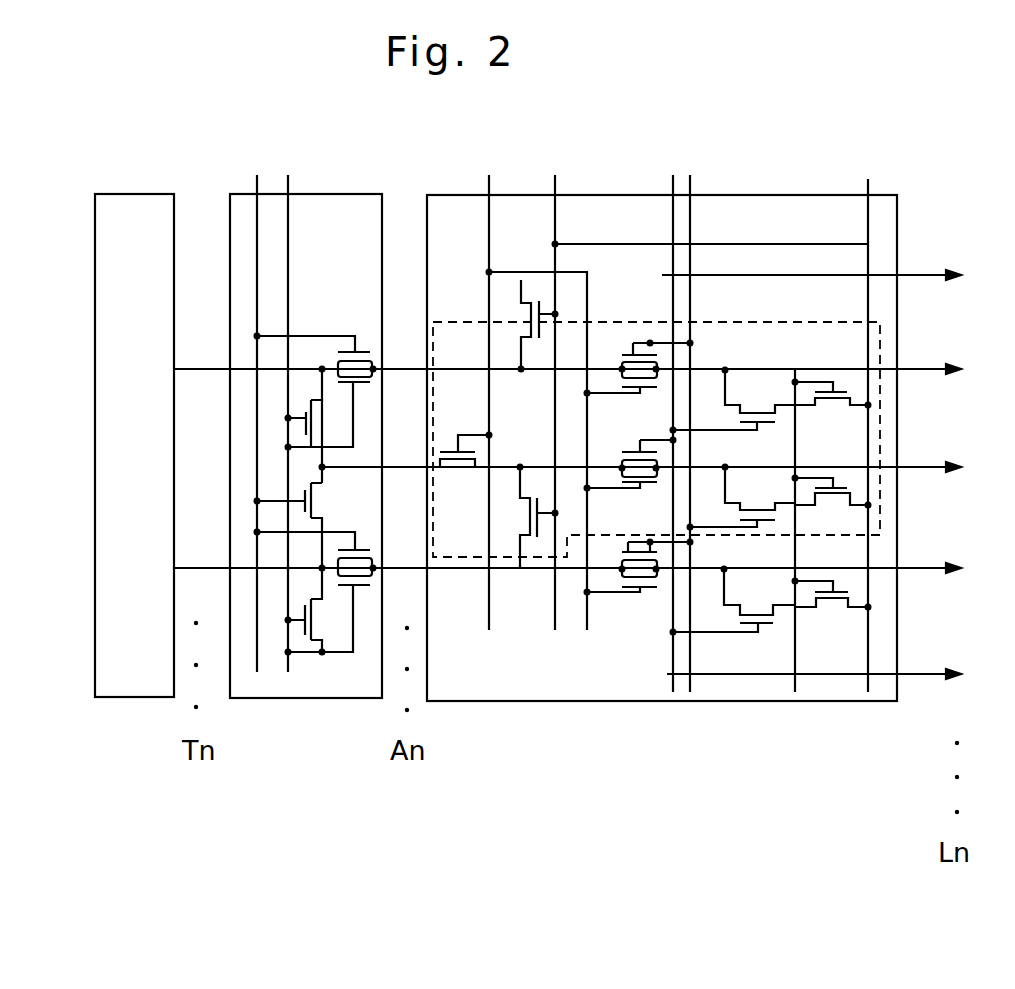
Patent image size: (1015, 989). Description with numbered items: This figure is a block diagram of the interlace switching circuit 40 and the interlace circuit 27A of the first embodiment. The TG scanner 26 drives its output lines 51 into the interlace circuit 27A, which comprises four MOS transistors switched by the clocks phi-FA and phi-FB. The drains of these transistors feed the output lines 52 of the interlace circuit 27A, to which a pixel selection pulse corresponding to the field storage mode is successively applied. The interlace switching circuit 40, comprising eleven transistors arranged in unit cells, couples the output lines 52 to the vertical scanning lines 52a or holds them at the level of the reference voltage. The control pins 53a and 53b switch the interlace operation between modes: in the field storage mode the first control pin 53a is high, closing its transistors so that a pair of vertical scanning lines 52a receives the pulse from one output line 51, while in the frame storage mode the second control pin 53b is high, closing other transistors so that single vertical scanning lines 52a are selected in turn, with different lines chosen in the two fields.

The TG scanner 26 is at (130, 193).
The interlace circuit 27A is at (297, 692).
The interlace switching circuit 40 is at (648, 688).
The output lines 51 is at (207, 363).
The output lines 52 is at (400, 363).
The vertical scanning lines 52a is at (917, 273).
The control pin 53a is at (489, 187).
The control pin 53b is at (555, 187).